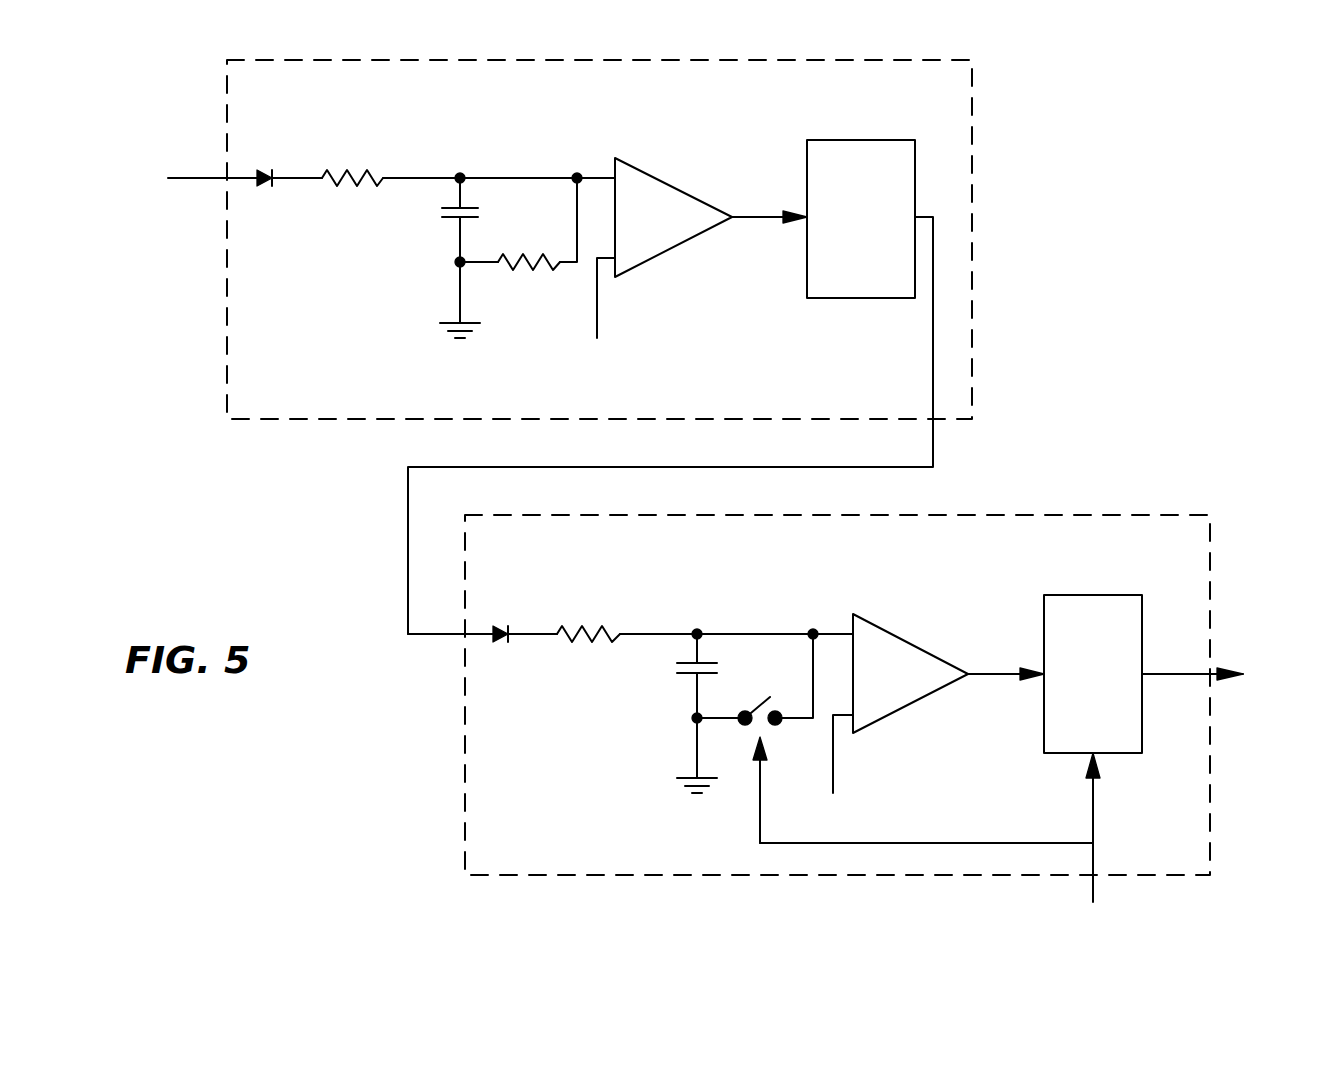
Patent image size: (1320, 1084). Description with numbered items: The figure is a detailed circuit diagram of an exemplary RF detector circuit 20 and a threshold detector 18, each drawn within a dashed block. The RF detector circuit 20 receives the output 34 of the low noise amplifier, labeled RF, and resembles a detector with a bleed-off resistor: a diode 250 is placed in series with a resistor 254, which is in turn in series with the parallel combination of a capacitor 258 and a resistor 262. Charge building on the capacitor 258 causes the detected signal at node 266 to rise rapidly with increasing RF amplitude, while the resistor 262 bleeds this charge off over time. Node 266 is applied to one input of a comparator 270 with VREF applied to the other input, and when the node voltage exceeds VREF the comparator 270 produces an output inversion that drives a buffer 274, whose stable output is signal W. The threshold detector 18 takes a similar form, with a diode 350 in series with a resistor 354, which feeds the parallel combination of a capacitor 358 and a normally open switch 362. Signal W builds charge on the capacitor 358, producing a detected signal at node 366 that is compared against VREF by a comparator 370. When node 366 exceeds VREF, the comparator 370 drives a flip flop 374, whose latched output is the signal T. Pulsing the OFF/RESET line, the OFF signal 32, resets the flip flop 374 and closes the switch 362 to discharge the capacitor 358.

The RF detector circuit 20 is at (972, 148).
The threshold detector 18 is at (1210, 603).
The output of LNA 34 is at (198, 182).
The diode 250 is at (258, 172).
The resistor 254 is at (347, 168).
The capacitor 258 is at (452, 222).
The bleed-off resistor 262 is at (558, 273).
The node 266 is at (570, 163).
The comparator 270 is at (697, 238).
The buffer 274 is at (862, 140).
The diode 350 is at (495, 625).
The resistor 354 is at (580, 627).
The capacitor 358 is at (693, 677).
The normally open switch 362 is at (780, 707).
The node 366 is at (813, 630).
The comparator 370 is at (937, 693).
The flip flop 374 is at (1093, 595).
The OFF signal 32 is at (937, 843).